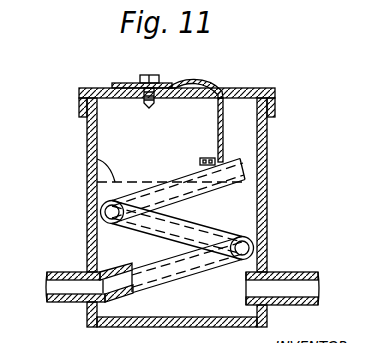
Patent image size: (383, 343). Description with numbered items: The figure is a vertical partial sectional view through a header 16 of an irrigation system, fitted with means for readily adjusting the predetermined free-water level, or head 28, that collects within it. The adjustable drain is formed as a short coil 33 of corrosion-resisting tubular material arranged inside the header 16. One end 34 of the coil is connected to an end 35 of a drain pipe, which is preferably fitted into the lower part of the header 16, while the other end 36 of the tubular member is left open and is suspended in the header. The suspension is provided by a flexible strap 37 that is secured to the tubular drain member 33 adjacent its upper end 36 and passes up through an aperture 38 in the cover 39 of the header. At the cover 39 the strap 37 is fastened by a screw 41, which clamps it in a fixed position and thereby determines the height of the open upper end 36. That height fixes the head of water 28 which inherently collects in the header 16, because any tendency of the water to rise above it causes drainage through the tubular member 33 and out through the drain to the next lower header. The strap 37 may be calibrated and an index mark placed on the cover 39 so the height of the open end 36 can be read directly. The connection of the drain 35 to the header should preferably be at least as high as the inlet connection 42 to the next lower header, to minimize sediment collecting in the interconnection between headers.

The header 16 is at (87, 135).
The head 28 is at (88, 162).
The coil 33 is at (172, 192).
The end 34 is at (102, 268).
The end of drain pipe 35 is at (77, 302).
The other end 36 is at (235, 166).
The flexible strap 37 is at (218, 122).
The aperture 38 is at (222, 88).
The cover 39 is at (87, 88).
The screw 41 is at (156, 76).
The inlet connection 42 is at (283, 272).